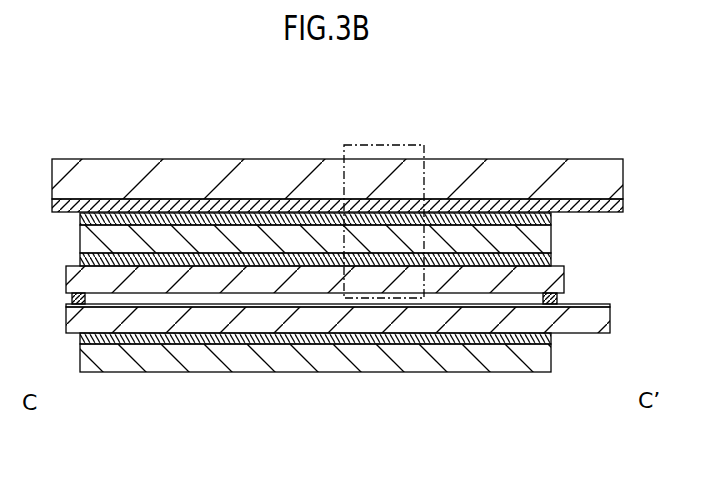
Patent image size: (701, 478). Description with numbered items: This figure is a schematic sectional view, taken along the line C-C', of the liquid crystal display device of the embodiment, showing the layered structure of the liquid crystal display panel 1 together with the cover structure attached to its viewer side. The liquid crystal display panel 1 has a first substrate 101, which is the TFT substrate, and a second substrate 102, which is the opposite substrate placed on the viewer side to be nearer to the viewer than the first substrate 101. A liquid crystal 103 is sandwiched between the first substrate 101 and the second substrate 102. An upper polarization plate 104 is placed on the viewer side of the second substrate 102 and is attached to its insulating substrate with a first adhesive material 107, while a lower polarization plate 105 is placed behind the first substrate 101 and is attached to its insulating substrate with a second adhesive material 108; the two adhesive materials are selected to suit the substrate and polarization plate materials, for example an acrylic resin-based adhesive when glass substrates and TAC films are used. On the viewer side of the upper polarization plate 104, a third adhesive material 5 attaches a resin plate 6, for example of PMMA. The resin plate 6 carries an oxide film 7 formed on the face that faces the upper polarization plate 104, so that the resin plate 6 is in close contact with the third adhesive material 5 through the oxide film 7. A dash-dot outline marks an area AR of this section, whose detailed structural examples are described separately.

The liquid crystal display panel 1 is at (53, 225).
The third adhesive material 5 is at (293, 201).
The resin plate 6 is at (503, 177).
The oxide film 7 is at (578, 208).
The first substrate 101 is at (407, 320).
The second substrate 102 is at (478, 280).
The liquid crystal 103 is at (280, 299).
The upper polarization plate 104 is at (215, 240).
The lower polarization plate 105 is at (116, 355).
The first adhesive material 107 is at (143, 250).
The second adhesive material 108 is at (193, 333).
The area AR is at (394, 141).